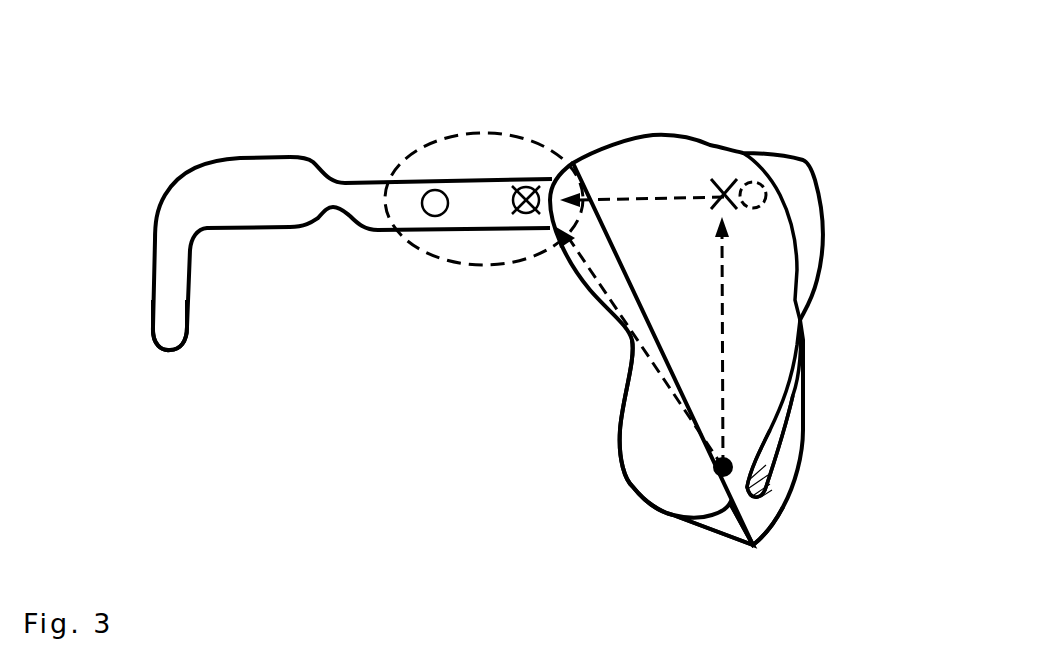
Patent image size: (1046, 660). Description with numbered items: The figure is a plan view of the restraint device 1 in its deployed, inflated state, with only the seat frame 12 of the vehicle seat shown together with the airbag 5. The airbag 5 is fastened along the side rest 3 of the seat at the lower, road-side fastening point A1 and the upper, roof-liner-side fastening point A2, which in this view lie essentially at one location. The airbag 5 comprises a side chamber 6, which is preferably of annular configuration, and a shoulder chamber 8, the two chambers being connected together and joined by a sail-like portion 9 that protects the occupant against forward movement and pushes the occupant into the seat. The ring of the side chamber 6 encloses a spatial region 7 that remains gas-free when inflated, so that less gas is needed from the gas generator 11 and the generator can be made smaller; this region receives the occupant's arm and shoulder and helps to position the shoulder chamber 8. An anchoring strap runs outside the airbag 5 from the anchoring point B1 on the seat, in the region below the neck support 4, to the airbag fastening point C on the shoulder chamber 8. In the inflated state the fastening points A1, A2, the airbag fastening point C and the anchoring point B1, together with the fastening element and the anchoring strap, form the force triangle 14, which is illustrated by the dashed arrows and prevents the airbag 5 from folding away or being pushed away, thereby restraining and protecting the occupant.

The restraint device 1 is at (408, 351).
The side rest 3 is at (486, 325).
The neck support 4 is at (484, 140).
The airbag 5 is at (555, 367).
The side chamber 6 is at (818, 554).
The spatial region 7 is at (825, 469).
The shoulder chamber 8 is at (595, 448).
The sail-like portion 9 is at (713, 562).
The gas generator 11 is at (813, 180).
The seat frame 12 is at (352, 181).
The force triangle 14 is at (642, 249).
The fastening point A1 is at (754, 146).
The fastening point A2 is at (754, 146).
The anchoring point B1 is at (493, 246).
The airbag fastening point C is at (796, 447).